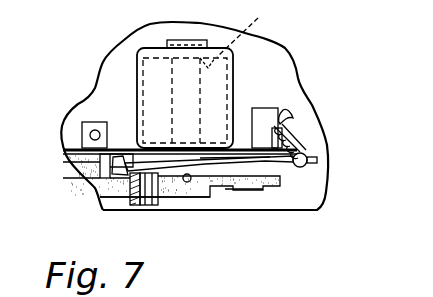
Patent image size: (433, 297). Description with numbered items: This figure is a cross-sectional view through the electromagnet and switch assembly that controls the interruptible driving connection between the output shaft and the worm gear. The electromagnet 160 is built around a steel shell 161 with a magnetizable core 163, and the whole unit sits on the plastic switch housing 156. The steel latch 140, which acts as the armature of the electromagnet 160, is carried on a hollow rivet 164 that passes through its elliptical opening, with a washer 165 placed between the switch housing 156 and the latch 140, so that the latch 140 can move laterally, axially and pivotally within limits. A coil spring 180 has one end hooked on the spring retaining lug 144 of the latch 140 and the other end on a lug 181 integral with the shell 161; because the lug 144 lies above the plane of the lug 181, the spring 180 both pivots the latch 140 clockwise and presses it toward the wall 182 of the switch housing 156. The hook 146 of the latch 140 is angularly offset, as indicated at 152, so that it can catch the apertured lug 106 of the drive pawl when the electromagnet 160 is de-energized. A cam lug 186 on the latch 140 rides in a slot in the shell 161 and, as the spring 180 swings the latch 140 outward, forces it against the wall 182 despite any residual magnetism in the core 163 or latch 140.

The apertured lug 106 is at (117, 210).
The latch 140 is at (227, 163).
The spring retaining lug 144 is at (282, 110).
The hook 146 is at (130, 190).
The angular offset 152 is at (162, 178).
The switch housing 156 is at (222, 188).
The electromagnet 160 is at (133, 81).
The steel shell 161 is at (141, 51).
The magnetizable core 163 is at (256, 32).
The hollow rivet 164 is at (323, 207).
The washer 165 is at (270, 169).
The coil spring 180 is at (300, 133).
The lug 181 is at (318, 160).
The wall 182 is at (187, 182).
The cam lug 186 is at (117, 171).